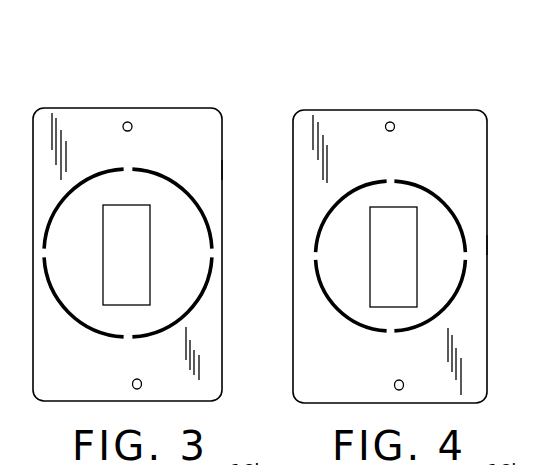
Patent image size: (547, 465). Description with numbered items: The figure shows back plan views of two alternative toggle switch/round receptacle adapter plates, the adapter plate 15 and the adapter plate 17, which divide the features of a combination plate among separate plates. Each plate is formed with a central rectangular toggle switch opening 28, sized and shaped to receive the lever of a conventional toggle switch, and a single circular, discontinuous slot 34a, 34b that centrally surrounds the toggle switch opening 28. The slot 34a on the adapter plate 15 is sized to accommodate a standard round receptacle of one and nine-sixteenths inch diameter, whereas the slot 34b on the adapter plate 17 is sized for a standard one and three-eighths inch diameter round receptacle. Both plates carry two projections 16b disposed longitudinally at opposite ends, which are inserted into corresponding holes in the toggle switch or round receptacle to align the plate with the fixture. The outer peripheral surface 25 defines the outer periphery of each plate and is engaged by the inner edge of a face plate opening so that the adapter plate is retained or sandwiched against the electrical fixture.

In FIG. 3, the adapter plate 15 is at (68, 108).
In FIG. 4, the adapter plate 17 is at (313, 109).
In FIG. 3, the projections 16b is at (128, 122).
In FIG. 4, the projections 16b is at (390, 122).
In FIG. 3, the outer peripheral surface 25 is at (222, 168).
In FIG. 4, the outer peripheral surface 25 is at (487, 245).
In FIG. 3, the toggle switch opening 28 is at (108, 243).
In FIG. 4, the toggle switch opening 28 is at (413, 228).
In FIG. 3, the circular, discontinuous slot 34a is at (70, 311).
In FIG. 4, the circular, discontinuous slot 34b is at (463, 283).